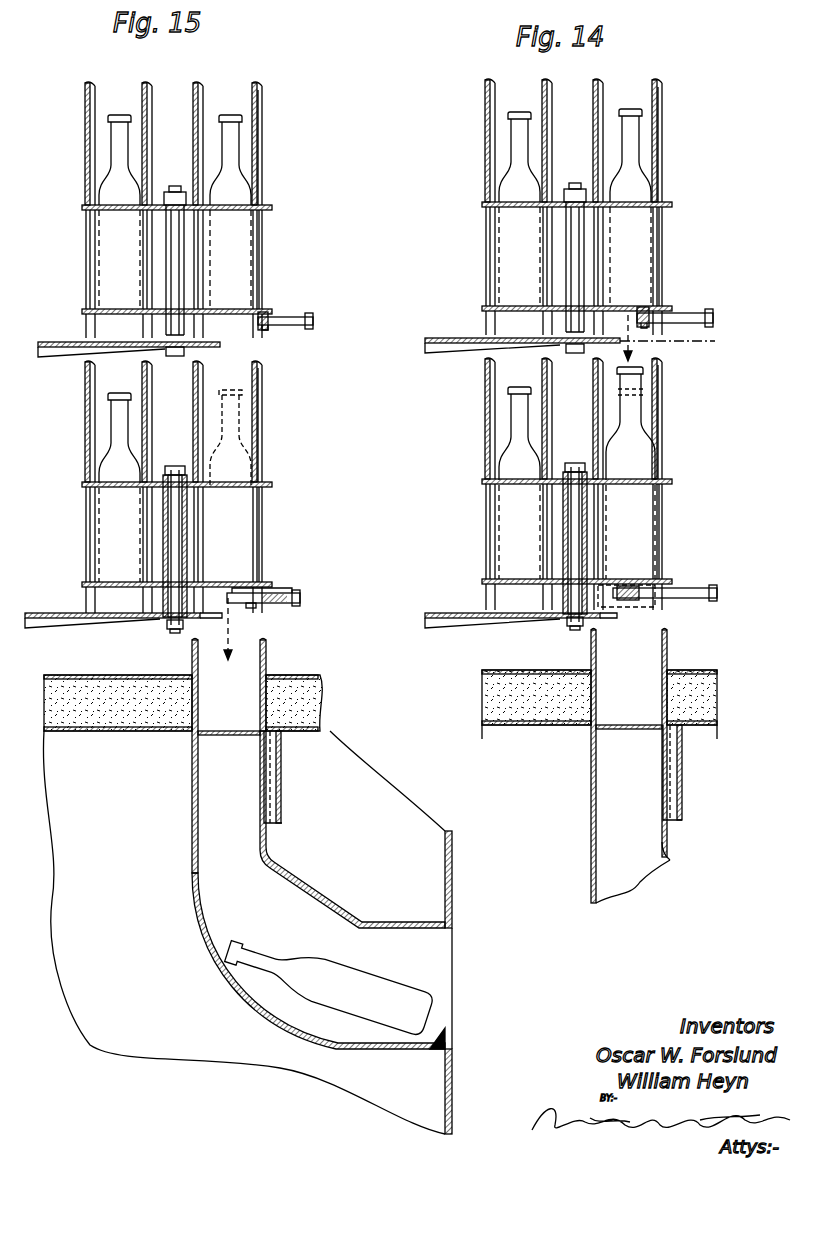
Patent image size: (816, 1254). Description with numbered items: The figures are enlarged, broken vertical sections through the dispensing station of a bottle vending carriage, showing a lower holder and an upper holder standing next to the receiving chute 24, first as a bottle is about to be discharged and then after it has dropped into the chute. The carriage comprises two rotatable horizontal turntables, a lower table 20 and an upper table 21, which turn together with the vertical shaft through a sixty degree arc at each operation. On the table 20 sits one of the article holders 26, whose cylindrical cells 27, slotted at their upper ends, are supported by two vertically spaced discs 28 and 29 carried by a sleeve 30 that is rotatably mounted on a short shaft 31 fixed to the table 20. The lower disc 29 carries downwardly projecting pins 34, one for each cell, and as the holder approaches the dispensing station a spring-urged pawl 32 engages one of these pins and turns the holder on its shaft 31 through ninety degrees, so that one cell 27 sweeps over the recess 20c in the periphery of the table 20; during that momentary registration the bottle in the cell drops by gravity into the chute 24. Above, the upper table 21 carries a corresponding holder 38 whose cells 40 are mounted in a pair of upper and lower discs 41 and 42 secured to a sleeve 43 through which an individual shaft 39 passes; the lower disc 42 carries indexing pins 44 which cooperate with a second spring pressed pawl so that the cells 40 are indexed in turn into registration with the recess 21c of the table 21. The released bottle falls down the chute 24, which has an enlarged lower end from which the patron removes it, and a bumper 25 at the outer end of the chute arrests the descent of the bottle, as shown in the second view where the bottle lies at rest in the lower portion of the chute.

In FIG. 15, the lower turntable 20 is at (60, 619).
In FIG. 14, the lower turntable 20 is at (521, 632).
In FIG. 15, the recess of lower table 20c is at (218, 621).
In FIG. 15, the upper turntable 21 is at (70, 350).
In FIG. 14, the upper turntable 21 is at (521, 367).
In FIG. 14, the recess of upper table 21c is at (681, 338).
In FIG. 15, the chute 24 is at (209, 799).
In FIG. 14, the chute 24 is at (614, 766).
In FIG. 15, the bumper 25 is at (447, 1036).
In FIG. 15, the article holder 26 is at (264, 421).
In FIG. 14, the article holder 26 is at (602, 484).
In FIG. 15, the cell 27 is at (262, 473).
In FIG. 14, the cell 27 is at (685, 472).
In FIG. 15, the upper disc 28 is at (272, 484).
In FIG. 14, the upper disc 28 is at (597, 469).
In FIG. 15, the lower disc 29 is at (265, 582).
In FIG. 14, the lower disc 29 is at (593, 563).
In FIG. 15, the sleeve 30 is at (186, 536).
In FIG. 14, the sleeve 30 is at (634, 542).
In FIG. 15, the short shaft 31 is at (170, 602).
In FIG. 14, the short shaft 31 is at (548, 628).
In FIG. 15, the pawl 32 is at (280, 596).
In FIG. 14, the pawl 32 is at (661, 583).
In FIG. 15, the indexing pin 34 is at (258, 590).
In FIG. 15, the upper holder 38 is at (271, 208).
In FIG. 14, the upper holder 38 is at (606, 201).
In FIG. 15, the shaft of upper holder 39 is at (173, 191).
In FIG. 14, the shaft of upper holder 39 is at (575, 180).
In FIG. 15, the upper cell 40 is at (266, 150).
In FIG. 14, the upper cell 40 is at (599, 207).
In FIG. 15, the upper disc of upper holder 41 is at (263, 205).
In FIG. 14, the upper disc of upper holder 41 is at (685, 196).
In FIG. 15, the lower disc of upper holder 42 is at (192, 289).
In FIG. 14, the lower disc of upper holder 42 is at (593, 282).
In FIG. 15, the sleeve of upper holder 43 is at (178, 243).
In FIG. 14, the sleeve of upper holder 43 is at (510, 277).
In FIG. 15, the indexing pin of upper holder 44 is at (285, 308).
In FIG. 14, the indexing pin of upper holder 44 is at (686, 302).